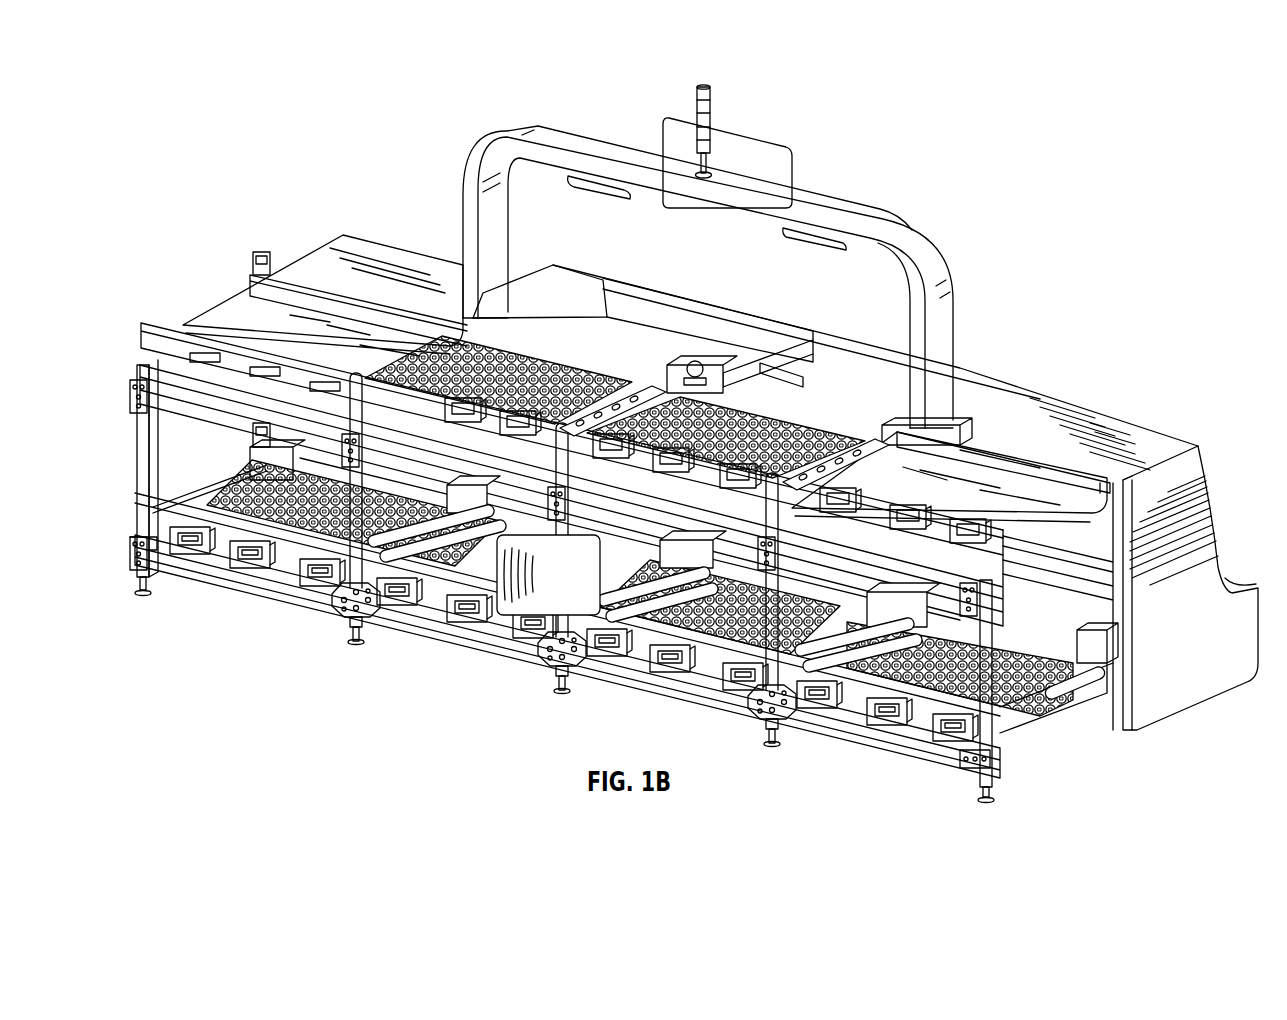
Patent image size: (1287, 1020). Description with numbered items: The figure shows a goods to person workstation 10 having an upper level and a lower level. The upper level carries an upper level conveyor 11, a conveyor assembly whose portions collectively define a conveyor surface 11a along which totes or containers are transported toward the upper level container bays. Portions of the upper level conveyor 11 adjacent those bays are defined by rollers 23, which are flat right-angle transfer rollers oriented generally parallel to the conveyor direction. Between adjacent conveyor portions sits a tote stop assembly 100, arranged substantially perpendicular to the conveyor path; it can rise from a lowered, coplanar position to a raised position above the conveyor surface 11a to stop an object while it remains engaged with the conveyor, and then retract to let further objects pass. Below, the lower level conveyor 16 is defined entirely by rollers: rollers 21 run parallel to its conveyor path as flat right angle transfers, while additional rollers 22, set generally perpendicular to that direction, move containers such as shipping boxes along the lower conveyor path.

The goods to person workstation 10 is at (1085, 79).
The upper level conveyor 11 is at (214, 289).
The conveyor surface 11a is at (312, 305).
The lower level conveyor 16 is at (1107, 653).
The rollers 21 is at (300, 500).
The additional rollers 22 is at (207, 490).
The rollers 23 is at (525, 358).
The tote stop assembly 100 is at (653, 392).